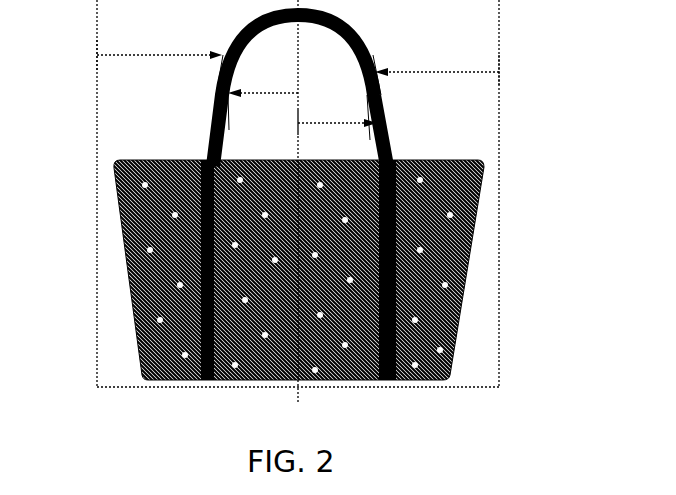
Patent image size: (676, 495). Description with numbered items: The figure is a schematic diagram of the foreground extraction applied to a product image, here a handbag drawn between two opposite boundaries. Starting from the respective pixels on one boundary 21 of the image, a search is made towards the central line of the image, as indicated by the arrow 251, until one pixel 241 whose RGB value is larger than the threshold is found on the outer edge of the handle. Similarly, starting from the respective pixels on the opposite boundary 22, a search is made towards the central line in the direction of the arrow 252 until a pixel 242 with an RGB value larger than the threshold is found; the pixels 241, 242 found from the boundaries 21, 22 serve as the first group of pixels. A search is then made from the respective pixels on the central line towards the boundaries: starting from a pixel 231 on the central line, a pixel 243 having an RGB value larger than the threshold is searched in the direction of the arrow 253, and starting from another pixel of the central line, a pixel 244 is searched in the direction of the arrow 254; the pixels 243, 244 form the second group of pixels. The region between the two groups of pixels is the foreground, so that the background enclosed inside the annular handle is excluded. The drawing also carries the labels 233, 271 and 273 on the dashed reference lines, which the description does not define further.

The boundary 21 is at (97, 113).
The boundary 22 is at (500, 170).
The pixel 231 is at (285, 122).
The center line 233 is at (313, 201).
The pixel 241 is at (213, 66).
The pixel 242 is at (386, 74).
The pixel 243 is at (366, 119).
The pixel 244 is at (242, 112).
The arrow 251 is at (159, 49).
The arrow 252 is at (437, 65).
The arrow 253 is at (337, 117).
The arrow 254 is at (263, 87).
The first boundary line 271 is at (82, 55).
The second boundary line 273 is at (515, 70).